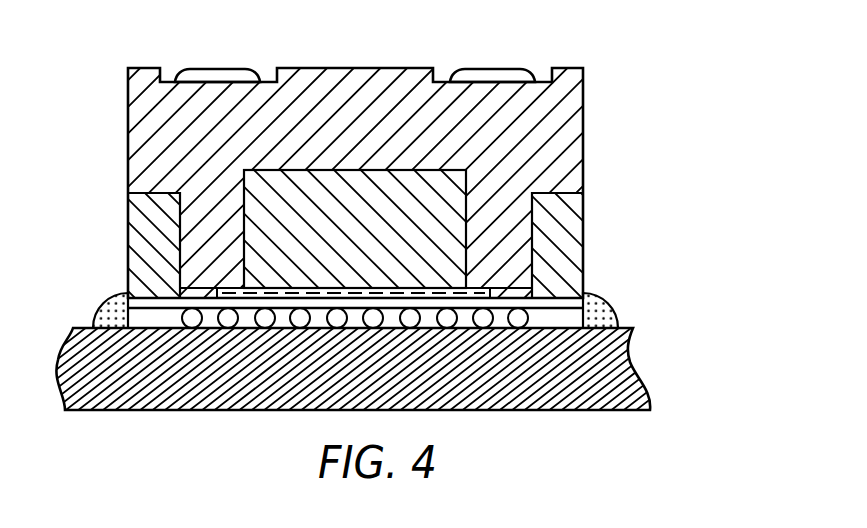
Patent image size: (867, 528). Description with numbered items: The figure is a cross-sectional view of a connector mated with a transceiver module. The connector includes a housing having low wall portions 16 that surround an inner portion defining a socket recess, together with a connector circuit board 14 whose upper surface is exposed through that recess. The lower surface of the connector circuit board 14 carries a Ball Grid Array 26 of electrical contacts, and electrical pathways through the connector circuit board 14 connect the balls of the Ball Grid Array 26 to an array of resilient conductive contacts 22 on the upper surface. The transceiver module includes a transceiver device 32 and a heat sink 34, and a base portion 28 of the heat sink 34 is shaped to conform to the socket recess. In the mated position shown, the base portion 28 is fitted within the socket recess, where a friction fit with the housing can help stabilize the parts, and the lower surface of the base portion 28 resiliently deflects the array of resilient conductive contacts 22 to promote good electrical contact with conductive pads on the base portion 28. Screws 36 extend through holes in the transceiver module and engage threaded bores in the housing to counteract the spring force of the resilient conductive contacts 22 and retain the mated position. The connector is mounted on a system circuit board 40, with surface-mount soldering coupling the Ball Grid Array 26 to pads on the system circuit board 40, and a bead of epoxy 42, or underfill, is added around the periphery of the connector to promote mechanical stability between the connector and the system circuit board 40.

The connector circuit board 14 is at (106, 298).
The low wall portions 16 is at (128, 250).
The array of resilient conductive contacts 22 is at (352, 300).
The Ball Grid Array 26 is at (530, 320).
The base portion 28 is at (181, 221).
The transceiver device 32 is at (472, 171).
The heat sink 34 is at (337, 68).
The screws 36 is at (217, 68).
The system circuit board 40 is at (636, 357).
The bead of epoxy 42 is at (606, 296).